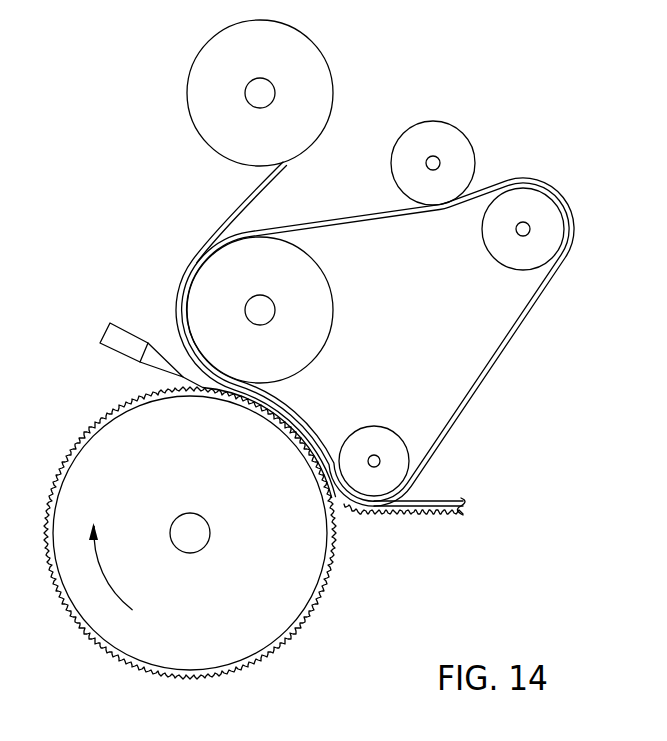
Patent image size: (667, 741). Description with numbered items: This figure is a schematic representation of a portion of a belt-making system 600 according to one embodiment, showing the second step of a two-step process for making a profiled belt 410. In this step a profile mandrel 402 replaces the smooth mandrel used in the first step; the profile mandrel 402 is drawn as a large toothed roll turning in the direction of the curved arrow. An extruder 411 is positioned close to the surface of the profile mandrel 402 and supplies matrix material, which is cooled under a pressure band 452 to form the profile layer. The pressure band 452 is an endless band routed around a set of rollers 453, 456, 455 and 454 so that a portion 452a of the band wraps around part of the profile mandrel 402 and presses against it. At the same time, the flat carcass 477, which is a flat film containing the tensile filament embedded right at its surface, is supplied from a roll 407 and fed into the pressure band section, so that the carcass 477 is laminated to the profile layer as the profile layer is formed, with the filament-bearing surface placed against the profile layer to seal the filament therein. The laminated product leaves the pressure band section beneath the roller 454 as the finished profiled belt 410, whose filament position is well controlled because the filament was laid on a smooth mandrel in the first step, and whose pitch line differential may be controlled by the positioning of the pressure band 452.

The belt-making system 600 is at (557, 100).
The supply roll 407 is at (203, 106).
The carcass 477 is at (244, 199).
The idler roller 456 is at (461, 147).
The roller 455 is at (540, 202).
The roller 453 is at (328, 274).
The pressure band 452 is at (492, 366).
The belt portion 452a is at (300, 418).
The roller 454 is at (386, 438).
The profiled belt 410 is at (418, 501).
The extruder 411 is at (108, 337).
The profile mandrel 402 is at (302, 597).